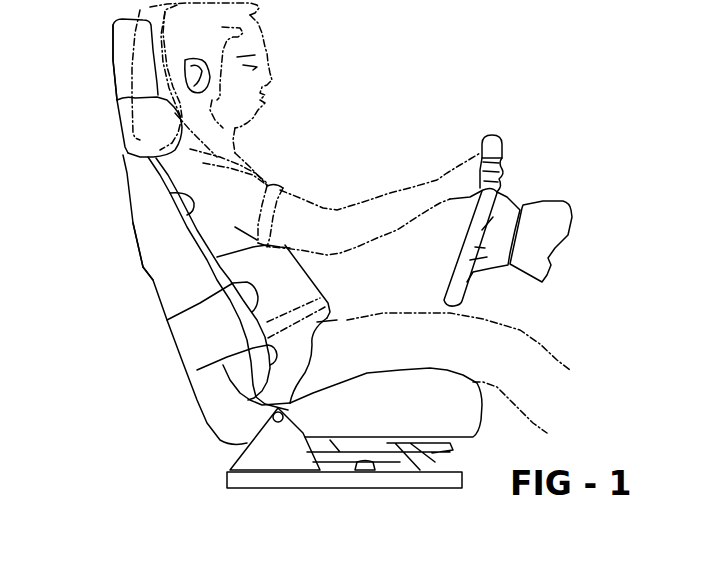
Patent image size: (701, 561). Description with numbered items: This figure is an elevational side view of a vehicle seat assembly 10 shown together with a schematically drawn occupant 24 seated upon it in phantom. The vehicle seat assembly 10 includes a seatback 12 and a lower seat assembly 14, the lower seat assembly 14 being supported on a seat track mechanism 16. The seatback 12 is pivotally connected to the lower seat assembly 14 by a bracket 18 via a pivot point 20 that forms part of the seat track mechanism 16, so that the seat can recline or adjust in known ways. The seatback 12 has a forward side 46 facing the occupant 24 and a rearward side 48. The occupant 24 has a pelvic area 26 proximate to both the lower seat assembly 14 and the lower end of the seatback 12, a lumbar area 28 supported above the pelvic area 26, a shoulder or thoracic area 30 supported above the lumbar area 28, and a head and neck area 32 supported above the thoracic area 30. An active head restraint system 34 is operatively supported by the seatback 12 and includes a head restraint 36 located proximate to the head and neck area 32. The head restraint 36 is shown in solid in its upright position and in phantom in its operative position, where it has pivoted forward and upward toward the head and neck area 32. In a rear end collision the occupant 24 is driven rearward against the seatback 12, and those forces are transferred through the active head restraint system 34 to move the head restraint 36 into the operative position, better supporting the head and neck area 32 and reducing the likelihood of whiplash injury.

The vehicle seat assembly 10 is at (140, 342).
The seatback 12 is at (147, 290).
The lower seat assembly 14 is at (488, 405).
The seat track mechanism 16 is at (277, 488).
The bracket 18 is at (250, 463).
The pivot point 20 is at (317, 325).
The occupant 24 is at (287, 148).
The pelvic area 26 is at (197, 370).
The lumbar area 28 is at (167, 320).
The thoracic area 30 is at (170, 193).
The head and neck area 32 is at (198, 118).
The active head restraint system 34 is at (115, 135).
The head restraint 36 is at (128, 25).
The forward side 46 is at (270, 196).
The rearward side 48 is at (143, 270).